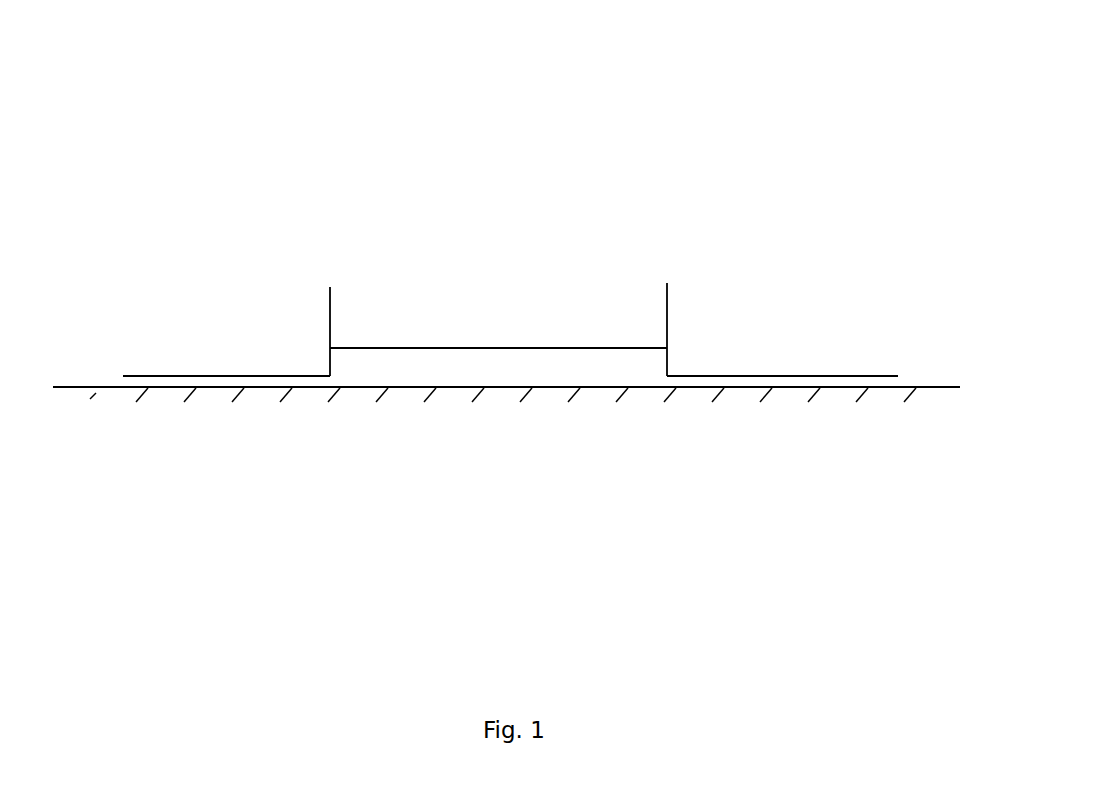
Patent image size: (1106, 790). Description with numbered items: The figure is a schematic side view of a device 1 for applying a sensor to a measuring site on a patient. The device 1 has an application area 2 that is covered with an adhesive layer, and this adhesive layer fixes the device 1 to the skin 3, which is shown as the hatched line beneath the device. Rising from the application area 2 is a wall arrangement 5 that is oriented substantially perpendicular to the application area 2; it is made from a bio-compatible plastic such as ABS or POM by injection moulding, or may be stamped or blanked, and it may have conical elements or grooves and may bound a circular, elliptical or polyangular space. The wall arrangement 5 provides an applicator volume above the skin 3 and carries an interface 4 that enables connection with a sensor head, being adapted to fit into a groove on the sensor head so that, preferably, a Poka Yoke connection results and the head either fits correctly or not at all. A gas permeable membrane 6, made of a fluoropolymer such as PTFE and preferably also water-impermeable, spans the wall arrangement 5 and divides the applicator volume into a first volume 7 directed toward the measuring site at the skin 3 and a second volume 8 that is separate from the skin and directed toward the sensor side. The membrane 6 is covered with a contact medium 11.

The device 1 is at (491, 67).
The application area 2 is at (230, 376).
The skin 3 is at (935, 387).
The interface 4 is at (667, 300).
The wall arrangement 5 is at (330, 311).
The gas permeable membrane 6 is at (632, 348).
The first volume 7 is at (475, 387).
The second volume 8 is at (498, 308).
The contact medium 11 is at (537, 348).